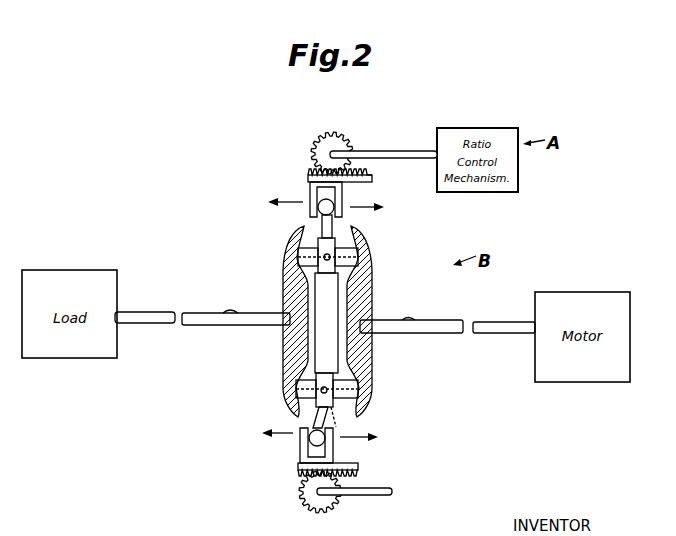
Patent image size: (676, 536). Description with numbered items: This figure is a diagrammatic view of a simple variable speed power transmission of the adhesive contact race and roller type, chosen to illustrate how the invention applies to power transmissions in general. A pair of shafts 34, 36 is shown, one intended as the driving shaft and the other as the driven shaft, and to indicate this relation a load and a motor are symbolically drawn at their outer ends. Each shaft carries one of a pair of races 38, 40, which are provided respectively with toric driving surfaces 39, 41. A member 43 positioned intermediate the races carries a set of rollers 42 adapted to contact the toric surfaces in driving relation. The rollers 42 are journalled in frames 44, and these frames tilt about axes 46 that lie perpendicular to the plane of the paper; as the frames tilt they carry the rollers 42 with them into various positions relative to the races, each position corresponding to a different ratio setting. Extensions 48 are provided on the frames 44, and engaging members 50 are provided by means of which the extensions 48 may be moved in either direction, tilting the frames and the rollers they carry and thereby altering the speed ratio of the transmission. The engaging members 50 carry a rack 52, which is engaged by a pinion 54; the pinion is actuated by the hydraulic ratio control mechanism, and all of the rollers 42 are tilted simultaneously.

The shaft 34 is at (188, 325).
The shaft 36 is at (440, 332).
The race 38 is at (284, 350).
The toric driving surface 39 is at (300, 236).
The race 40 is at (335, 398).
The toric driving surface 41 is at (337, 266).
The rollers 42 is at (300, 258).
The member 43 is at (330, 302).
The frames 44 is at (337, 233).
The axes 46 is at (337, 255).
The extensions 48 is at (303, 214).
The engaging members 50 is at (311, 193).
The rack 52 is at (312, 175).
The pinion 54 is at (340, 133).